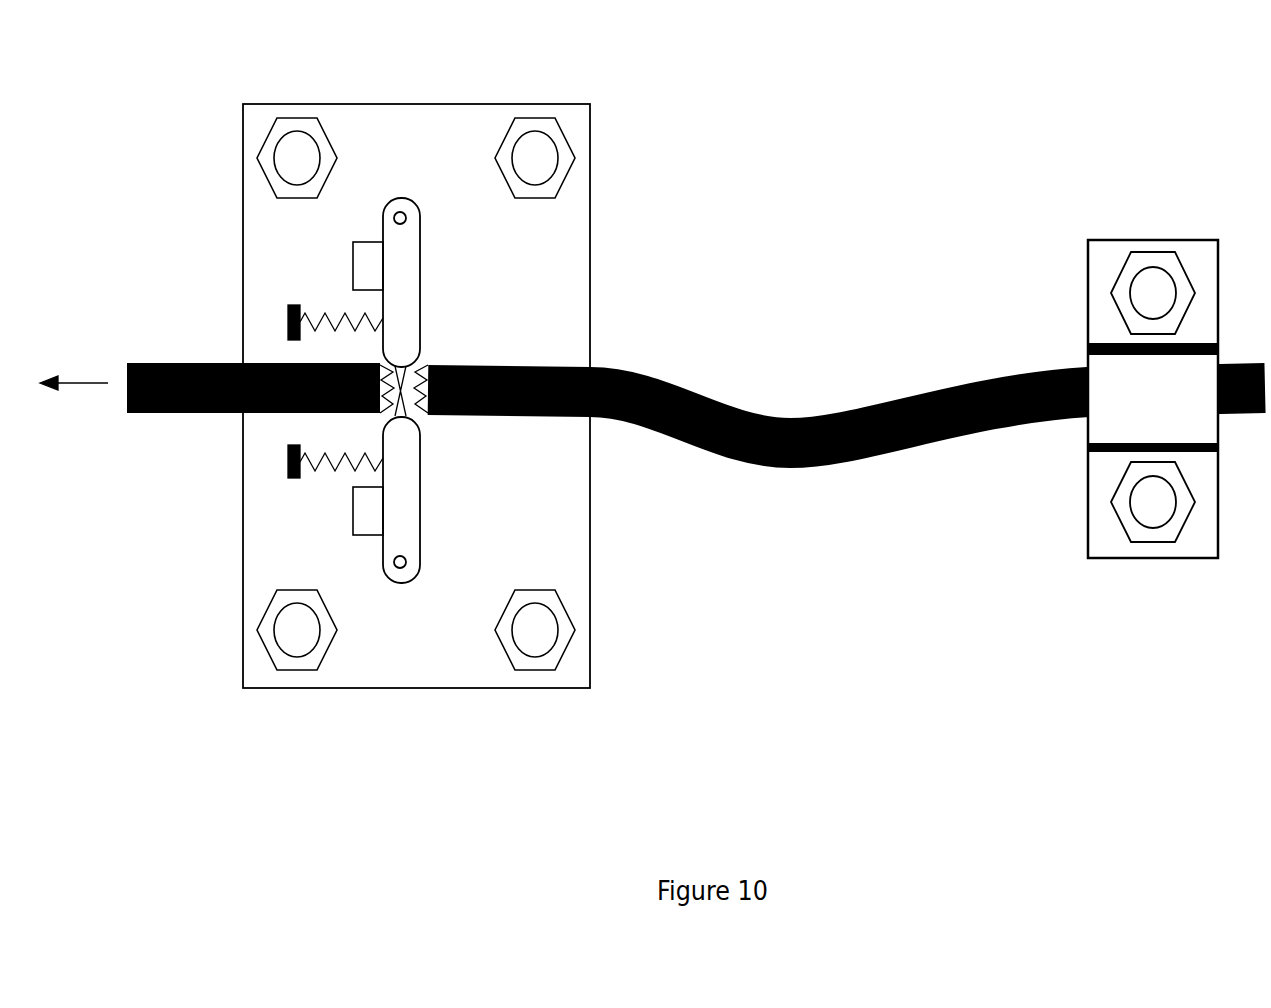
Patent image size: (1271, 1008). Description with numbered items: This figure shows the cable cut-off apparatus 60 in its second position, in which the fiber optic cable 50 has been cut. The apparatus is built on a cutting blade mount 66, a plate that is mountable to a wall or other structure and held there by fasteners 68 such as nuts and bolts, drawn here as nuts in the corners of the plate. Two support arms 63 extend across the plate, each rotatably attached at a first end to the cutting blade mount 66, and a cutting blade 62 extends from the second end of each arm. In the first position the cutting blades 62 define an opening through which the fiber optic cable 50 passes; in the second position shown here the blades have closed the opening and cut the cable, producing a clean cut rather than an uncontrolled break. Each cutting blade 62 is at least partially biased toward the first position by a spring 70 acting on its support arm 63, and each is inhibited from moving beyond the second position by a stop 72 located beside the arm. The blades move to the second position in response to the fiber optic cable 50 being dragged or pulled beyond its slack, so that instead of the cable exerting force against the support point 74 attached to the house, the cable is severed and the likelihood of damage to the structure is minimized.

The fiber optic cable 50 is at (945, 385).
The cable cut-off apparatus 60 is at (172, 132).
The cutting blade 62 is at (430, 367).
The support arm 63 is at (410, 270).
The cutting blade mount 66 is at (578, 532).
The fastener 68 is at (538, 145).
The spring 70 is at (300, 465).
The stop 72 is at (362, 270).
The support point 74 is at (1110, 267).